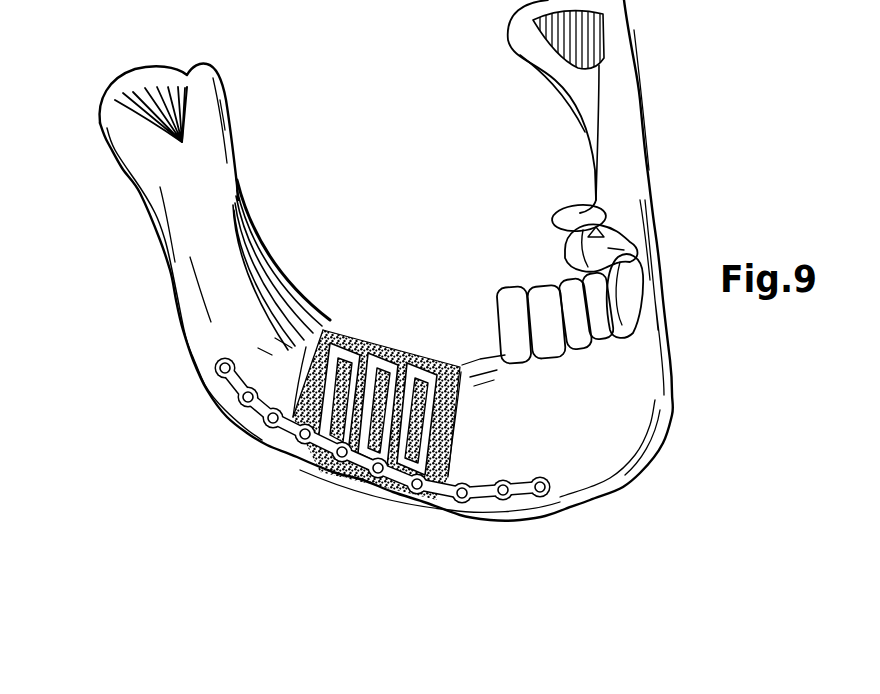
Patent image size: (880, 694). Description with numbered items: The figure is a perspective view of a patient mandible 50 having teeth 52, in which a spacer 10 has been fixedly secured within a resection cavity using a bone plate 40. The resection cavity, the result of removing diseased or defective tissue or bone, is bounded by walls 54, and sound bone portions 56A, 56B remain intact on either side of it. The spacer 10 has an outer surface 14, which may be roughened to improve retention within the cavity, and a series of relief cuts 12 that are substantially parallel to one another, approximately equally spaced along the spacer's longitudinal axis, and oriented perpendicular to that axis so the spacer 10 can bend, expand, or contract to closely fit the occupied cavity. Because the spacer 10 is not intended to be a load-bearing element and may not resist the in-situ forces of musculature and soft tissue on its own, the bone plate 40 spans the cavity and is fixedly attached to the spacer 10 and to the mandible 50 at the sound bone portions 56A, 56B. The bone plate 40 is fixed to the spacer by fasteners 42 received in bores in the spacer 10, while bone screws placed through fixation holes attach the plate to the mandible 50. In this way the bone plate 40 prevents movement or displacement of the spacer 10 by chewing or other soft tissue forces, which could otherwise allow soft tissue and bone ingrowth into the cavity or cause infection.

The spacer 10 is at (384, 361).
The relief cuts 12 is at (386, 373).
The outer surface 14 is at (448, 385).
The bone plate 40 is at (296, 424).
The fasteners 42 is at (377, 473).
The mandible 50 is at (212, 270).
The teeth 52 is at (544, 297).
The walls 54 is at (300, 368).
The sound bone portion 56A is at (247, 460).
The sound bone portion 56B is at (438, 528).